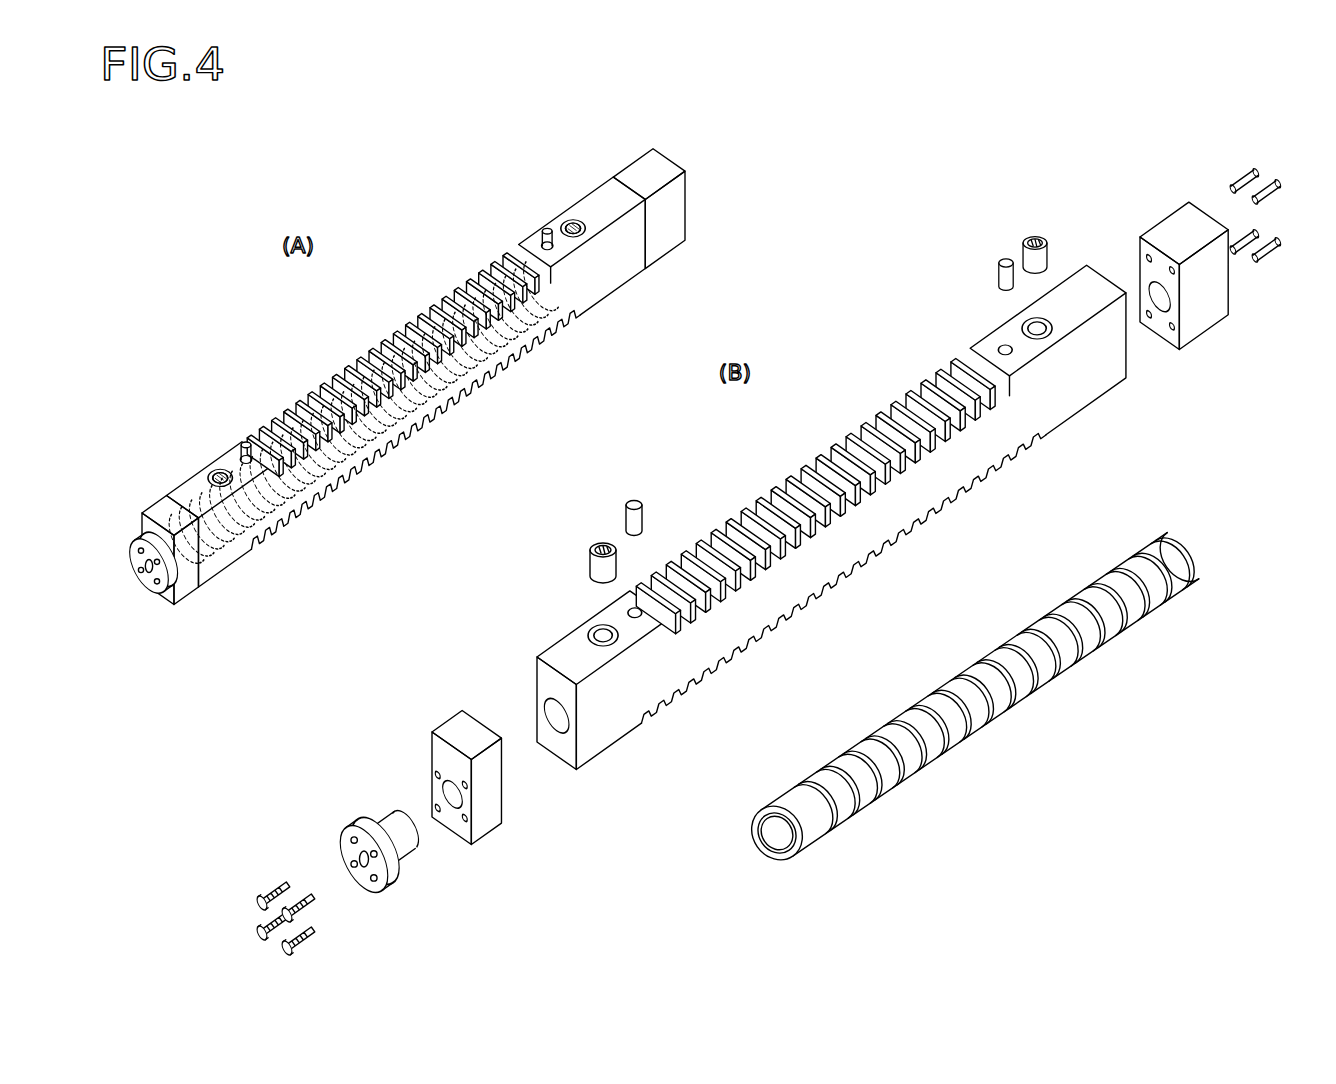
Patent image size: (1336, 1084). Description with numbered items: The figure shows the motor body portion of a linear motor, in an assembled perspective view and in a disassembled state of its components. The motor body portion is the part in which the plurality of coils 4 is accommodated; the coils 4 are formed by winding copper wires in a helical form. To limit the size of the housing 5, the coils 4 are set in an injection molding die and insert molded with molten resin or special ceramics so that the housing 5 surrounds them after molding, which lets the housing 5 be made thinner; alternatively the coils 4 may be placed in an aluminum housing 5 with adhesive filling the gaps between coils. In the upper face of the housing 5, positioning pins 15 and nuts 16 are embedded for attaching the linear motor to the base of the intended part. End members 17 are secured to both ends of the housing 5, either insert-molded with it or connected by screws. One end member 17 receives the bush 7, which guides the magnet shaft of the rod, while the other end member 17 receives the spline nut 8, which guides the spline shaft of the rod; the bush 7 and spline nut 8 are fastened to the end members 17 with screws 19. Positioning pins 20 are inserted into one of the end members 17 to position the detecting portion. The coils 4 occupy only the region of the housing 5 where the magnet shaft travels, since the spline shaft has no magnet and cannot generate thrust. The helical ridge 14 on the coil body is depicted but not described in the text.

The coils 4 is at (478, 380).
The housing 5 is at (613, 262).
The bush 7 is at (368, 832).
The spline nut 8 is at (1200, 288).
The helical ridge 14 is at (1032, 687).
The positioning pins 15 is at (1000, 273).
The nuts 16 is at (1035, 240).
The end members 17 is at (1160, 236).
The screws 19 is at (278, 880).
The positioning pins 20 is at (1275, 192).